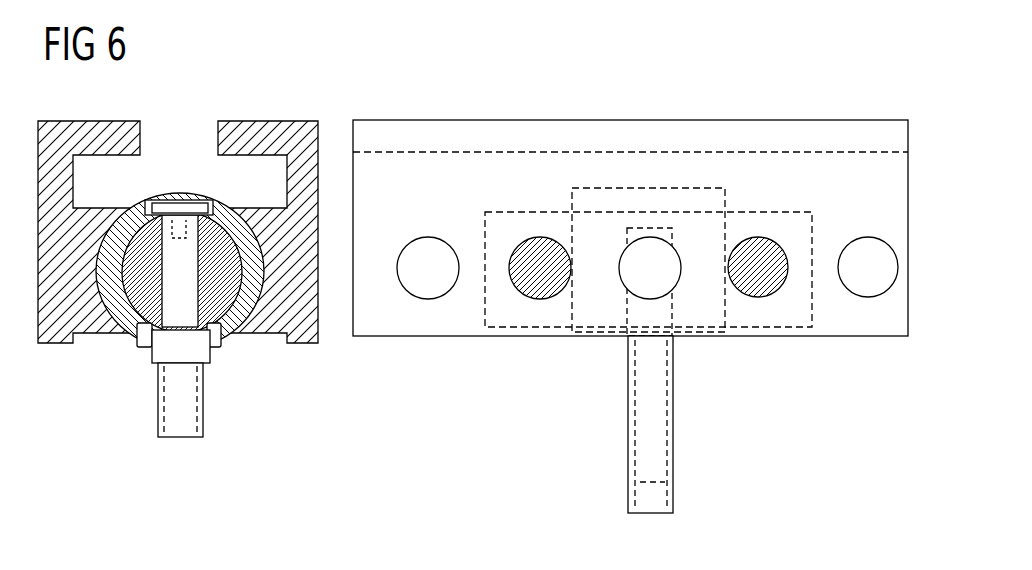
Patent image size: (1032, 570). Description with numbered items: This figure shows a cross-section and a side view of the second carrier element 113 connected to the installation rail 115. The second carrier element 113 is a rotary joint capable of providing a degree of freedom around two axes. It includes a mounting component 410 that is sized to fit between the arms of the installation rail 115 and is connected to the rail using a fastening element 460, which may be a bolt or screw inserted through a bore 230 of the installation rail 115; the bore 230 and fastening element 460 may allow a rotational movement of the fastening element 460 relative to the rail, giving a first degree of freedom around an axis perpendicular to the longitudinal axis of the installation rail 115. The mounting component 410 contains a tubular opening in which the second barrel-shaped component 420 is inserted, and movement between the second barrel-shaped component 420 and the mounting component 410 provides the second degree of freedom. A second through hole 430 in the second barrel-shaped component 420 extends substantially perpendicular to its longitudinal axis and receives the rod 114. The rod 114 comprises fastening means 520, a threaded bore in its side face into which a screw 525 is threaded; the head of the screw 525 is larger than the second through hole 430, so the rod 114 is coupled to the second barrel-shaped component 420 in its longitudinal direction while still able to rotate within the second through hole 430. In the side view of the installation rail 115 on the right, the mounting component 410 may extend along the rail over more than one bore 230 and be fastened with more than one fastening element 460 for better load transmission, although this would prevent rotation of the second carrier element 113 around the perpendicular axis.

The second carrier element 113 is at (98, 360).
The rod 114 is at (182, 422).
The installation rail 115 is at (292, 120).
The bore 230 is at (868, 256).
The mounting component 410 is at (278, 336).
The second barrel-shaped component 420 is at (145, 341).
The second through hole 430 is at (227, 338).
The fastening element 460 is at (640, 262).
The fastening means 520 is at (191, 206).
The screw 525 is at (162, 206).